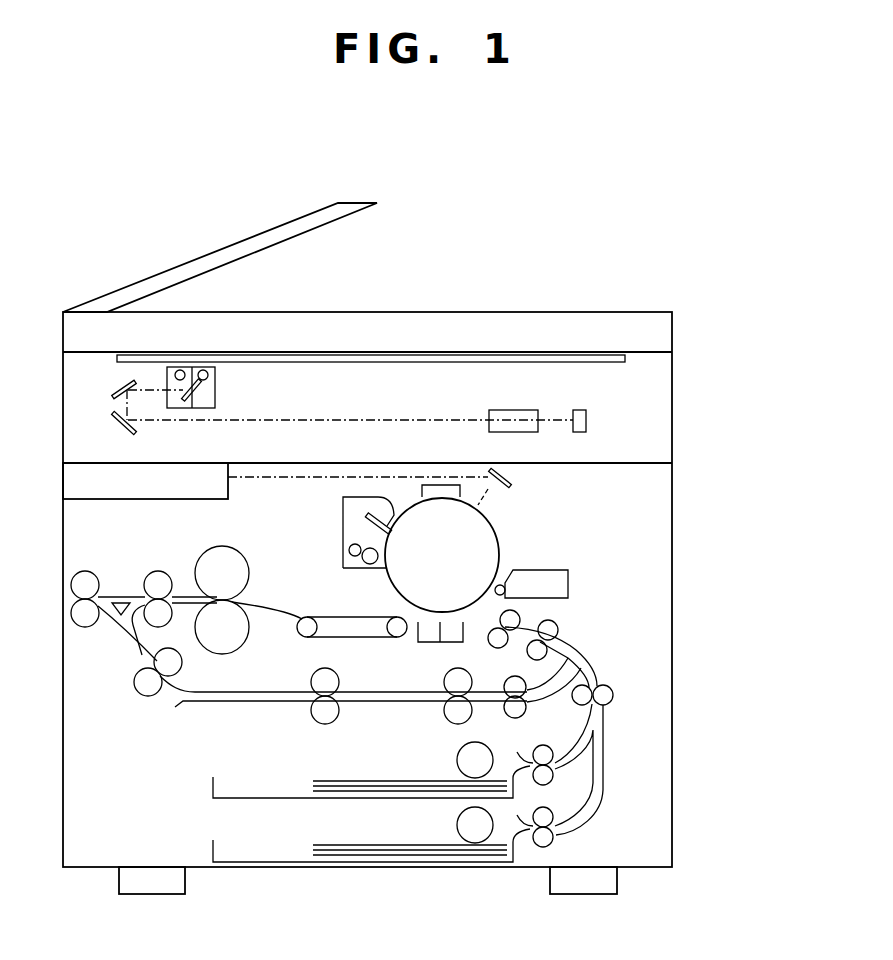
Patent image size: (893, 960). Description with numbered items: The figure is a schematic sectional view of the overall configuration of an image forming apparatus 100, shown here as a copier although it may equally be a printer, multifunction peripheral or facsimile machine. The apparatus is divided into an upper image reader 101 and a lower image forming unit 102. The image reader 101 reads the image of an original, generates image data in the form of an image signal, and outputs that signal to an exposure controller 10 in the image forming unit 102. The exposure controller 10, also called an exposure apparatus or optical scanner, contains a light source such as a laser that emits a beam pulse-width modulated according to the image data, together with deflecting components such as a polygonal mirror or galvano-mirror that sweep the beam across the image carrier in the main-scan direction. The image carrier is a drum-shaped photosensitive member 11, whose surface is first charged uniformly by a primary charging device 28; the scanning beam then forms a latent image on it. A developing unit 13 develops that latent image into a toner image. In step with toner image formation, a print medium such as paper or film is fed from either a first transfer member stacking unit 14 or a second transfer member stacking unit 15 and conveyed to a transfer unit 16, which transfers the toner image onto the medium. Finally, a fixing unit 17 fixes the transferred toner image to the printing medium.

The image forming apparatus 100 is at (594, 256).
The image reader 101 is at (688, 312).
The image forming unit 102 is at (688, 471).
The exposure controller 10 is at (173, 473).
The primary charging device 28 is at (421, 487).
The photosensitive member 11 is at (488, 520).
The developing unit 13 is at (560, 566).
The transfer unit 16 is at (430, 641).
The fixing unit 17 is at (243, 556).
The first transfer member stacking unit 14 is at (213, 789).
The second transfer member stacking unit 15 is at (213, 852).